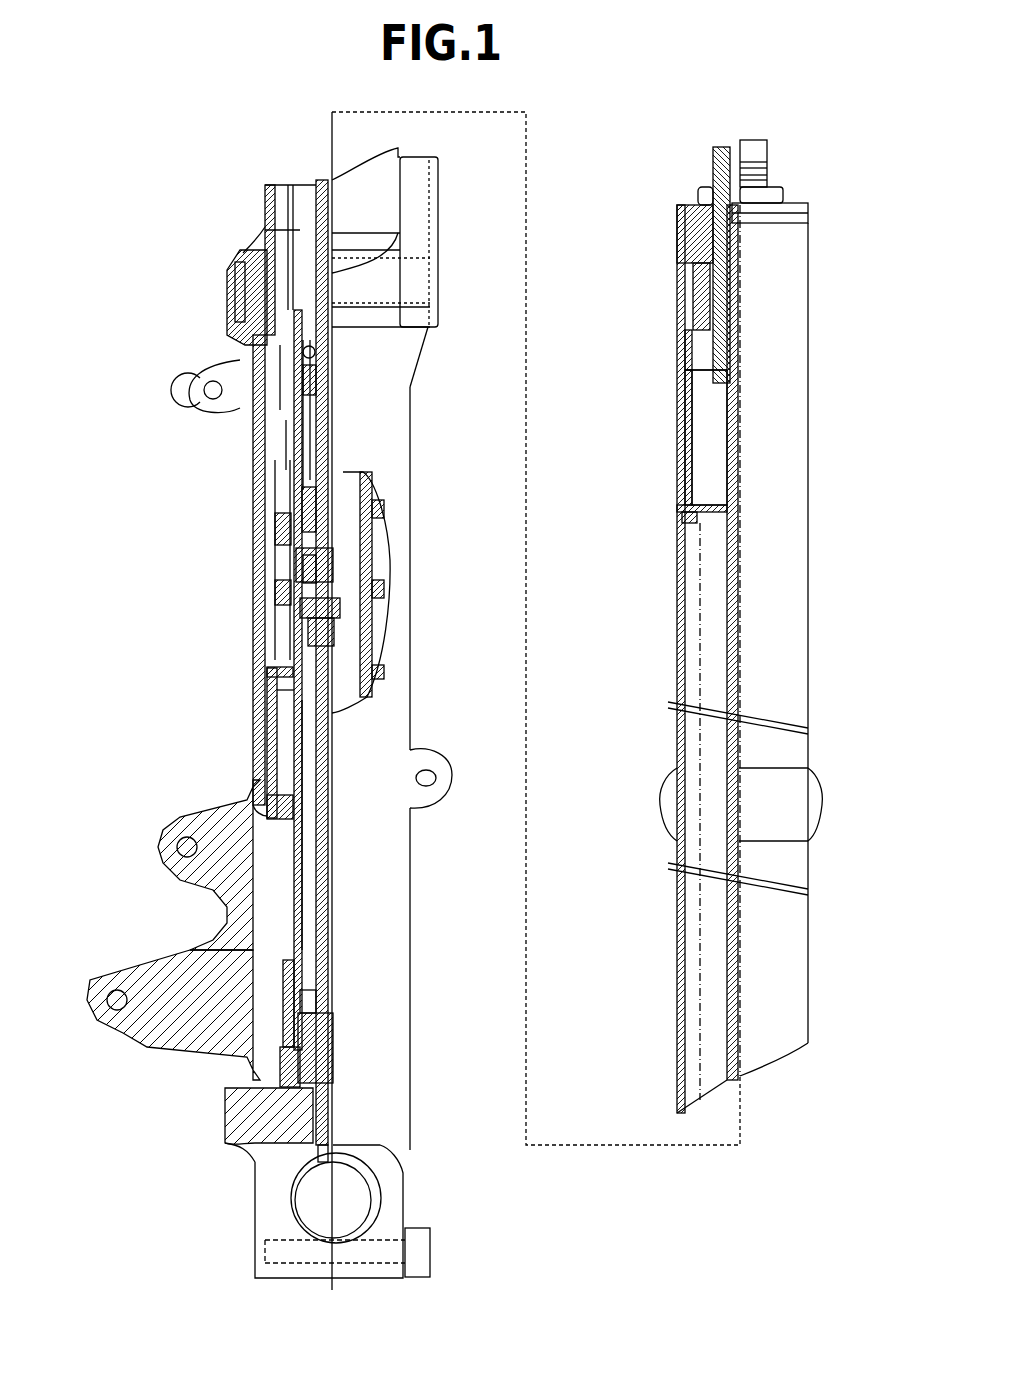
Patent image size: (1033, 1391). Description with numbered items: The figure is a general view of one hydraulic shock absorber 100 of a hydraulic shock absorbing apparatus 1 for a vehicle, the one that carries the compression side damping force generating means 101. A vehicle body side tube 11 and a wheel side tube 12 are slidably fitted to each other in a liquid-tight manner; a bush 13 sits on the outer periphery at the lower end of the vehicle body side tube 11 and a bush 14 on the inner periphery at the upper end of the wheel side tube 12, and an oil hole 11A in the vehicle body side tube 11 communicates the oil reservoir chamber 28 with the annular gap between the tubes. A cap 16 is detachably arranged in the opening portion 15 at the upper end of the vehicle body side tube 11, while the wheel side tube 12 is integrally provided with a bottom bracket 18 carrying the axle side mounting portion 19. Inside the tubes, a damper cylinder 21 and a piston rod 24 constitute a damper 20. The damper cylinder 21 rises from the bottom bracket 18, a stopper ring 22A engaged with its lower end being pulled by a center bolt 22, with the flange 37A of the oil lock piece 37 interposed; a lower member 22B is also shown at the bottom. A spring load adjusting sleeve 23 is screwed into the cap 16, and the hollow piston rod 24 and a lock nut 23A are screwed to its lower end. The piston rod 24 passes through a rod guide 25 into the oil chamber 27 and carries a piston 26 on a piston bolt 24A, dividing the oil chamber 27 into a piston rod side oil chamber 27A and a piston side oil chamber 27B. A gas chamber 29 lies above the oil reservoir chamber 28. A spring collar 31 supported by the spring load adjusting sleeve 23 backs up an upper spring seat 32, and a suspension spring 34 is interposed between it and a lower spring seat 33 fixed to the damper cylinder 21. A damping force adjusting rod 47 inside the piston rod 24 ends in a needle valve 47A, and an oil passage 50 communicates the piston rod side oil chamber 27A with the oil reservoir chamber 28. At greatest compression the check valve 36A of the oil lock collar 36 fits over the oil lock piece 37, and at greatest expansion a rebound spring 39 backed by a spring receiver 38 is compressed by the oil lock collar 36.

The hydraulic shock absorbing apparatus 1 is at (222, 148).
The hydraulic shock absorber 100 is at (145, 233).
The vehicle body side tube 11 is at (704, 370).
The oil hole 11A is at (300, 630).
The wheel side tube 12 is at (260, 712).
The bush 13 is at (276, 780).
The bush 14 is at (243, 345).
The opening portion 15 is at (678, 244).
The cap 16 is at (700, 200).
The bottom bracket 18 is at (177, 1023).
The axle side mounting portion 19 is at (290, 1210).
The damper 20 is at (290, 450).
The damper cylinder 21 is at (297, 913).
The center bolt 22 is at (305, 1150).
The stopper ring 22A is at (320, 1003).
The bottom cap nut 22B is at (310, 1063).
The spring load adjusting sleeve 23 is at (714, 178).
The lock nut 23A is at (706, 358).
The piston rod 24 is at (322, 182).
The piston bolt 24A is at (352, 565).
The rod guide 25 is at (310, 381).
The piston 26 is at (368, 640).
The oil chamber 27 is at (310, 427).
The piston rod side oil chamber 27A is at (307, 490).
The piston side oil chamber 27B is at (312, 752).
The oil reservoir chamber 28 is at (300, 228).
The gas chamber 29 is at (708, 433).
The spring collar 31 is at (679, 404).
The upper spring seat 32 is at (682, 508).
The lower spring seat 33 is at (243, 333).
The suspension spring 34 is at (682, 520).
The oil lock collar 36 is at (283, 680).
The check valve 36A is at (300, 795).
The oil lock piece 37 is at (282, 987).
The flange 37A is at (300, 1085).
The spring receiver 38 is at (292, 522).
The rebound spring 39 is at (300, 598).
The damping force adjusting rod 47 is at (718, 150).
The needle valve 47A is at (348, 588).
The oil passage 50 is at (287, 408).
The compression side damping force generating means 101 is at (328, 612).